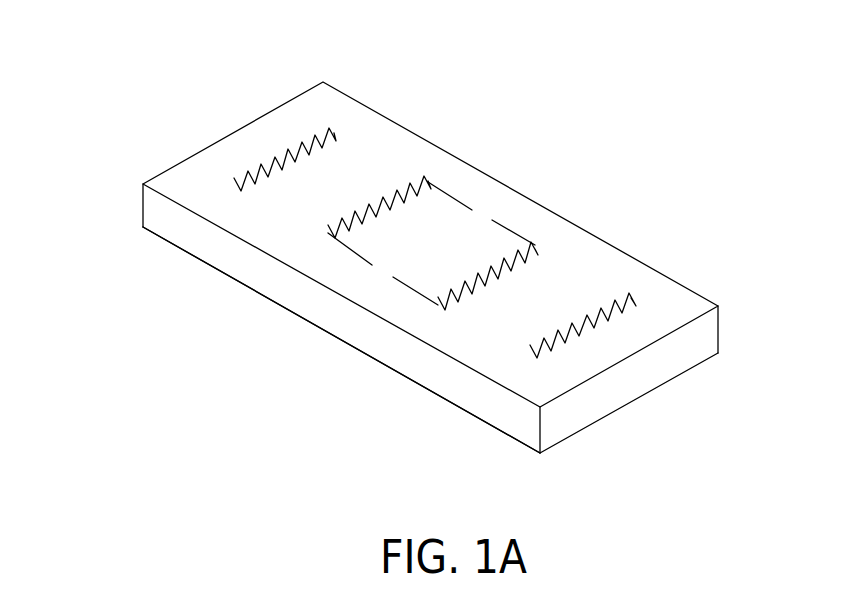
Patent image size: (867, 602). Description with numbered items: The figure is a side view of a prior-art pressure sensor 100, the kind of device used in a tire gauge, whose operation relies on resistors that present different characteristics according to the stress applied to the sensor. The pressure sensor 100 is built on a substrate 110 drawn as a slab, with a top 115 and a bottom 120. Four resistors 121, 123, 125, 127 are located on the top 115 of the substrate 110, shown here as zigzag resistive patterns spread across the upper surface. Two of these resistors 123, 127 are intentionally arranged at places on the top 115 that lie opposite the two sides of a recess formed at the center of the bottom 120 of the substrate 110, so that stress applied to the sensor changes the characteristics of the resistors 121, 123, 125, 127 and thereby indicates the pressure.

The pressure sensor 100 is at (422, 238).
The substrate 110 is at (610, 397).
The top of the substrate 115 is at (592, 253).
The bottom of the substrate 120 is at (303, 320).
The resistor 121 is at (334, 132).
The resistor 123 is at (428, 180).
The resistor 125 is at (535, 249).
The resistor 127 is at (630, 298).